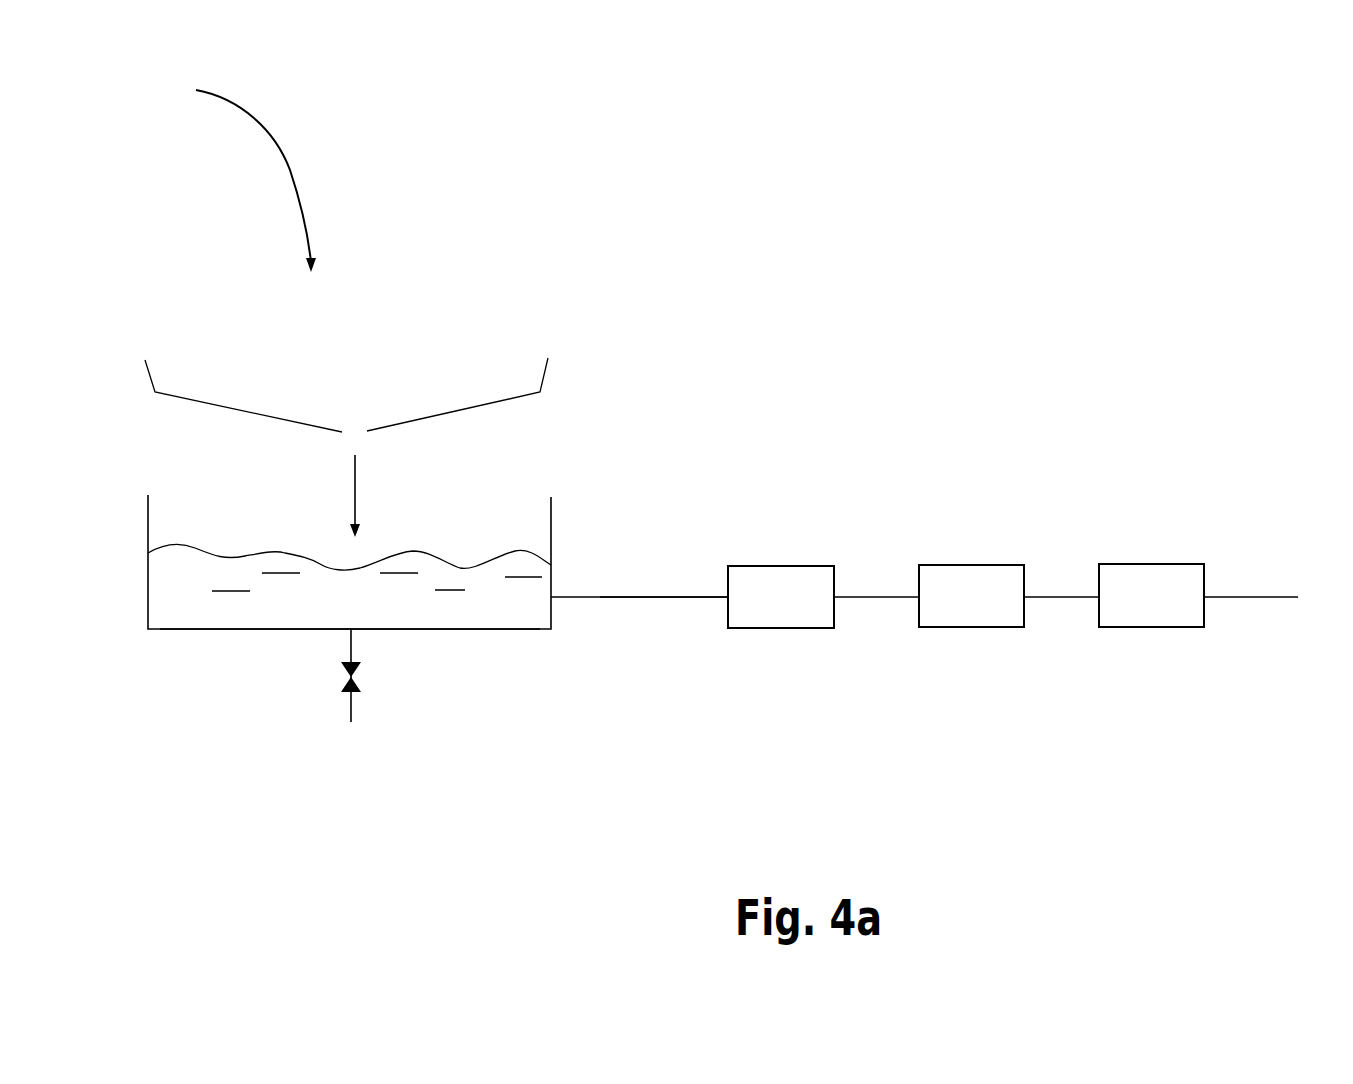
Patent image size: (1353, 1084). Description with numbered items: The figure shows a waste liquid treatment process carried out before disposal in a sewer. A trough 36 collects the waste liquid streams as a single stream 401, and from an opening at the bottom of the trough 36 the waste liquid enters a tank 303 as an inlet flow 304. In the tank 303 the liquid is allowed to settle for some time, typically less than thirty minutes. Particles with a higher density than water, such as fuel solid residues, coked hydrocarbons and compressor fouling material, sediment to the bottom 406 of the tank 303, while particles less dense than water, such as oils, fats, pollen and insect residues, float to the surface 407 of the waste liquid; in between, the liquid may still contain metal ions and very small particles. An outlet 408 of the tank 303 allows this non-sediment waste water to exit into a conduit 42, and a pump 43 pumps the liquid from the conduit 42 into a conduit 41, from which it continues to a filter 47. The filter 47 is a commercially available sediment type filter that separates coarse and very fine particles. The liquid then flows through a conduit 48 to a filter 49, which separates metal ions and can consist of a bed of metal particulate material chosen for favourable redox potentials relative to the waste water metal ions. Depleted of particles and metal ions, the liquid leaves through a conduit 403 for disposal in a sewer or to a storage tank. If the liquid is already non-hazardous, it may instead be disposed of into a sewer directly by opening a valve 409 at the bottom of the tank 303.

The stream 401 is at (290, 170).
The trough 36 is at (147, 373).
The inlet flow 304 is at (355, 485).
The tank 303 is at (148, 593).
The surface 407 is at (442, 563).
The bottom 406 is at (289, 628).
The valve 409 is at (333, 686).
The outlet 408 is at (551, 600).
The conduit 42 is at (675, 597).
The pump 43 is at (777, 587).
The conduit 41 is at (877, 597).
The filter 47 is at (959, 580).
The conduit 48 is at (1053, 597).
The filter 49 is at (1135, 580).
The conduit 403 is at (1253, 597).